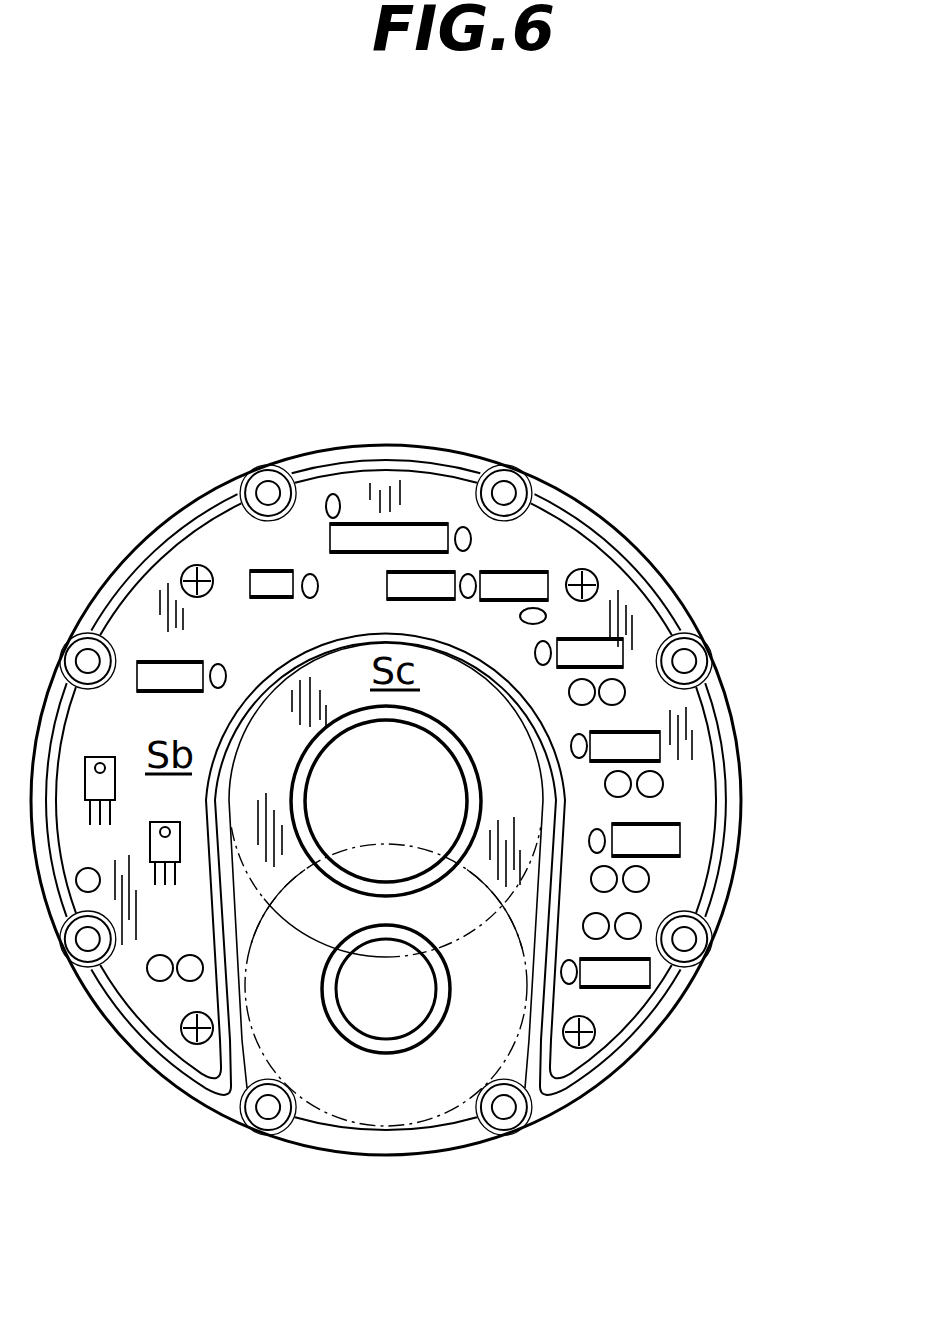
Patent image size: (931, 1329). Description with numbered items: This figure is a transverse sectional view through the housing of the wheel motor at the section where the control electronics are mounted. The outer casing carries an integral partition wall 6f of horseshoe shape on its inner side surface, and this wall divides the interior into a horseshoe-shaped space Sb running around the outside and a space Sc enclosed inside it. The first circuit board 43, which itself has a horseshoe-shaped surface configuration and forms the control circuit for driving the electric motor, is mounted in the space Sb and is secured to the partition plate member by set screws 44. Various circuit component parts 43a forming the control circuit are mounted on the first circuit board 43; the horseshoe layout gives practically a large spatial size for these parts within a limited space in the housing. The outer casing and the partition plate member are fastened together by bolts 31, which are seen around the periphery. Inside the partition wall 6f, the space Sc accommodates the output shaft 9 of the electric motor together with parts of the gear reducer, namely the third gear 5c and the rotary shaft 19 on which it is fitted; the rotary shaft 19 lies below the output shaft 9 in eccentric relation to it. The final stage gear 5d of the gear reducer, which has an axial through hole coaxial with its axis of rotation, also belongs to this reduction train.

The bolts 31 is at (503, 495).
The first circuit board 43 is at (542, 533).
The set screws 44 is at (597, 578).
The fourth or final stage gear 5d is at (505, 753).
The output shaft 9 is at (432, 797).
The circuit component parts 43a is at (175, 672).
The partition wall 6f is at (275, 660).
The third gear 5c is at (492, 1045).
The rotary shaft 19 is at (400, 1025).